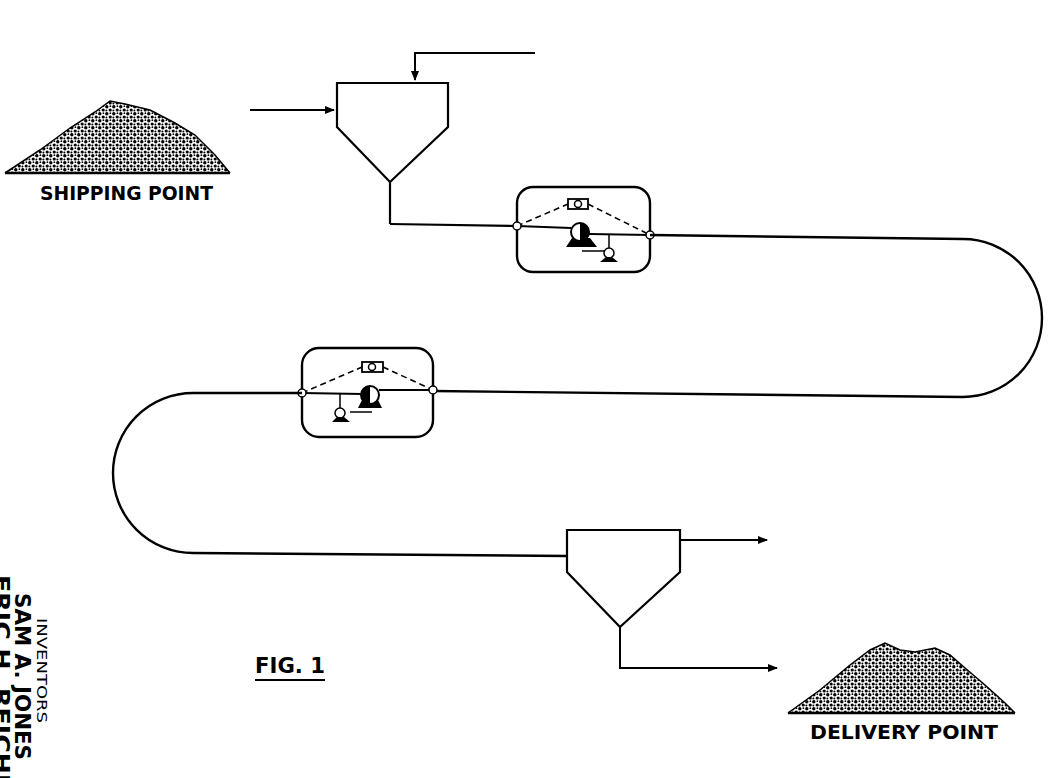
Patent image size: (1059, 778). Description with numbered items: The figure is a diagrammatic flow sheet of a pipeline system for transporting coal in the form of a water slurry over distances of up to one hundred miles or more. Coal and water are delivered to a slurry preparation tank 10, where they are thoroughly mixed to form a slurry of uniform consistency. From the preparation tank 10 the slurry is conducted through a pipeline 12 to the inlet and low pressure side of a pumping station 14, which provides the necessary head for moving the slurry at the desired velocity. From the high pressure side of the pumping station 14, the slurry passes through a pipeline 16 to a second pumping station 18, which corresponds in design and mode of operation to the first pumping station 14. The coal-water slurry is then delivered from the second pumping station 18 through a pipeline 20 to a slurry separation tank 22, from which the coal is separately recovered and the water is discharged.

The slurry preparation tank 10 is at (392, 128).
The pipeline 12 is at (390, 200).
The pumping station 14 is at (552, 261).
The pipeline 16 is at (805, 237).
The second pumping station 18 is at (410, 425).
The pipeline 20 is at (133, 425).
The slurry separation tank 22 is at (707, 600).